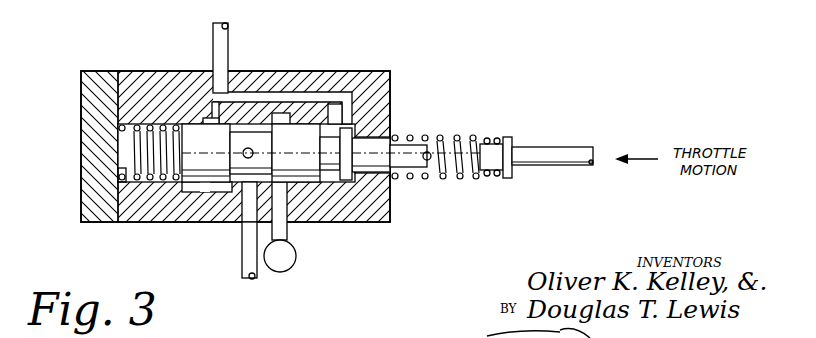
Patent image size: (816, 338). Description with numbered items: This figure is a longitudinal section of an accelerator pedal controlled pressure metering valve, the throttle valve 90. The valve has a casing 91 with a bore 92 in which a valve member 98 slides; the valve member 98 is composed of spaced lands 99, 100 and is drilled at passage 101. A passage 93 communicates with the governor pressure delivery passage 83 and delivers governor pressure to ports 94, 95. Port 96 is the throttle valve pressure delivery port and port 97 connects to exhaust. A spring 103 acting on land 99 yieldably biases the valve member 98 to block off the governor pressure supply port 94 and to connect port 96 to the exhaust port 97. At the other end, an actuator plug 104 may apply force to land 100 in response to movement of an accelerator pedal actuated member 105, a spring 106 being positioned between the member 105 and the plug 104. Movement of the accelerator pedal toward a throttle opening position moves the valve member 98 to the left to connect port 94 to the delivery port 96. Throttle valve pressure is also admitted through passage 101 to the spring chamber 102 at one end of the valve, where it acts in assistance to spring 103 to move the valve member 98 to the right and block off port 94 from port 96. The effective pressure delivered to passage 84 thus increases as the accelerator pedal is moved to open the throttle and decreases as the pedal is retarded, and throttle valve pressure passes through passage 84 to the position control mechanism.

The governor pressure delivery passage 83 is at (222, 53).
The passage 84 is at (248, 253).
The throttle valve 90 is at (138, 70).
The casing 91 is at (157, 77).
The bore 92 is at (125, 152).
The passage 93 is at (213, 118).
The port 94 is at (204, 114).
The port 95 is at (350, 122).
The throttle valve pressure delivery port 96 is at (240, 220).
The exhaust port 97 is at (290, 210).
The valve member 98 is at (205, 194).
The land 99 is at (187, 185).
The land 100 is at (310, 122).
The passage 101 is at (254, 153).
The chamber 102 is at (148, 222).
The spring 103 is at (123, 178).
The actuator plug 104 is at (380, 177).
The accelerator pedal actuated member 105 is at (537, 152).
The spring 106 is at (443, 138).